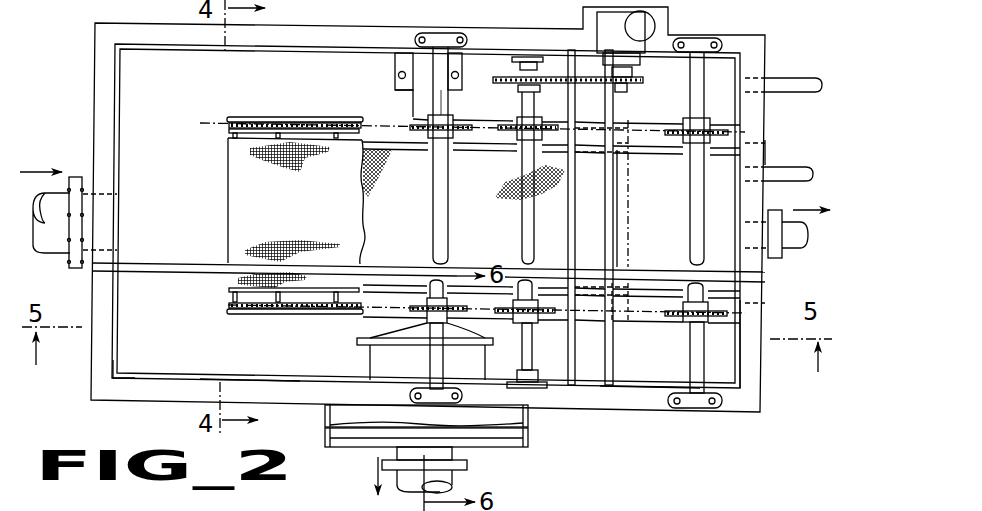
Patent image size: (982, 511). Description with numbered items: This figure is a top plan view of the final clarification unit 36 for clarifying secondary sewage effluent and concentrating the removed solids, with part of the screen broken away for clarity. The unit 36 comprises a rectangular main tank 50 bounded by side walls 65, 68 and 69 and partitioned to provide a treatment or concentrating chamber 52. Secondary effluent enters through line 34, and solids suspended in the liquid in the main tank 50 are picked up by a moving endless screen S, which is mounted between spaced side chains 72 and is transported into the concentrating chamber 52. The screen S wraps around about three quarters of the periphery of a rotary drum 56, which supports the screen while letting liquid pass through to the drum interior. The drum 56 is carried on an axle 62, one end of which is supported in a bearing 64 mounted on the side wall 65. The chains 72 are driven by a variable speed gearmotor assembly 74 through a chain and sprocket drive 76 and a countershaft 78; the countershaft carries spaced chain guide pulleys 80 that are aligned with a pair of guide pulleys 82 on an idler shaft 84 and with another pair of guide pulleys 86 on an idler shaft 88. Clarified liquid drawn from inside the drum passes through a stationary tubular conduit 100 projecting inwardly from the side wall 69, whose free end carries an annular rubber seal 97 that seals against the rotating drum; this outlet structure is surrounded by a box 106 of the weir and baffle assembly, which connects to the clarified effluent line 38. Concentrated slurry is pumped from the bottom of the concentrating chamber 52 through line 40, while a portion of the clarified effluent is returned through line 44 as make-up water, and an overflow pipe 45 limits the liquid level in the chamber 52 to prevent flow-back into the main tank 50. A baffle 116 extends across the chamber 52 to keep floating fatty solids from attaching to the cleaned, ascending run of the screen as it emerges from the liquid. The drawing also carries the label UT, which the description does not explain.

The final clarification unit 36 is at (90, 34).
The side wall of the main tank 65 is at (298, 50).
The main tank 50 is at (110, 376).
The opposite side wall of the main tank 68 is at (248, 378).
The side wall of the main tank 69 is at (740, 378).
The concentrating chamber 52 is at (683, 368).
The endless screen S is at (230, 245).
The rotary drum 56 is at (230, 192).
The side chains 72 is at (228, 121).
The idler shaft 84 is at (433, 227).
The guide pulleys 82 is at (463, 132).
The bearing 64 is at (413, 82).
The axle 62 is at (420, 100).
The countershaft 78 is at (522, 226).
The chain guide pulleys 80 is at (498, 124).
The chain and sprocket drive 76 is at (557, 77).
The variable speed gearmotor assembly 74 is at (655, 22).
The baffle 116 is at (614, 200).
The idler shaft 88 is at (690, 238).
The guide pulleys 86 is at (680, 135).
The line 44 is at (795, 79).
The treating unit UT is at (772, 152).
The overflow pipe 45 is at (785, 168).
The line 40 is at (815, 249).
The line 34 is at (58, 234).
The annular rubber seal 97 is at (368, 336).
The stationary tubular conduit 100 is at (378, 368).
The box 106 is at (325, 414).
The clarified effluent line 38 is at (453, 478).